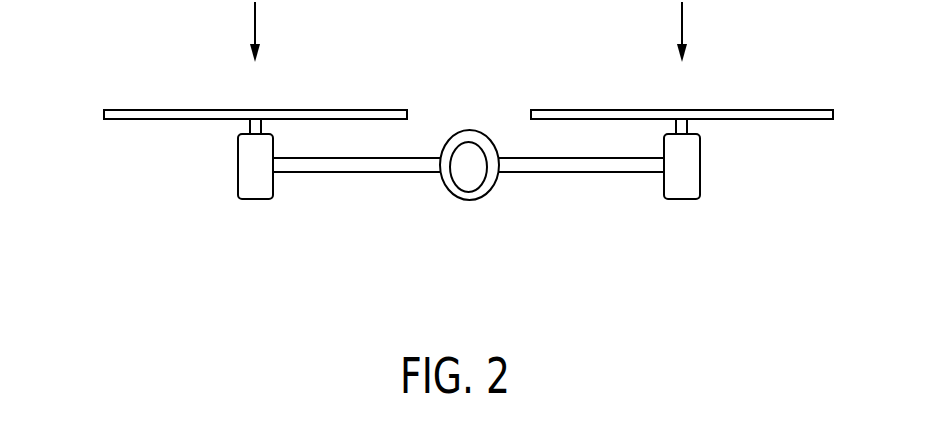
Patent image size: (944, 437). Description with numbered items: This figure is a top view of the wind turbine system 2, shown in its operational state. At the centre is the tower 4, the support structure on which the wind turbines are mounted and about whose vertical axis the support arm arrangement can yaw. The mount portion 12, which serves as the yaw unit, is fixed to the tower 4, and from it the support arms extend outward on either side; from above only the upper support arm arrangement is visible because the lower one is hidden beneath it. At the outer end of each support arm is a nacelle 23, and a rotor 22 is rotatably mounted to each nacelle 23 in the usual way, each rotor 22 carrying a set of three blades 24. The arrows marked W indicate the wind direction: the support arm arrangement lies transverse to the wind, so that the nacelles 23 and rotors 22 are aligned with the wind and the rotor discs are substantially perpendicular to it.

The wind turbine system 2 is at (108, 248).
The tower 4 is at (463, 187).
The mount portion 12 is at (490, 138).
The rotor 22 is at (249, 123).
The nacelle 23 is at (238, 178).
The blades 24 is at (169, 108).